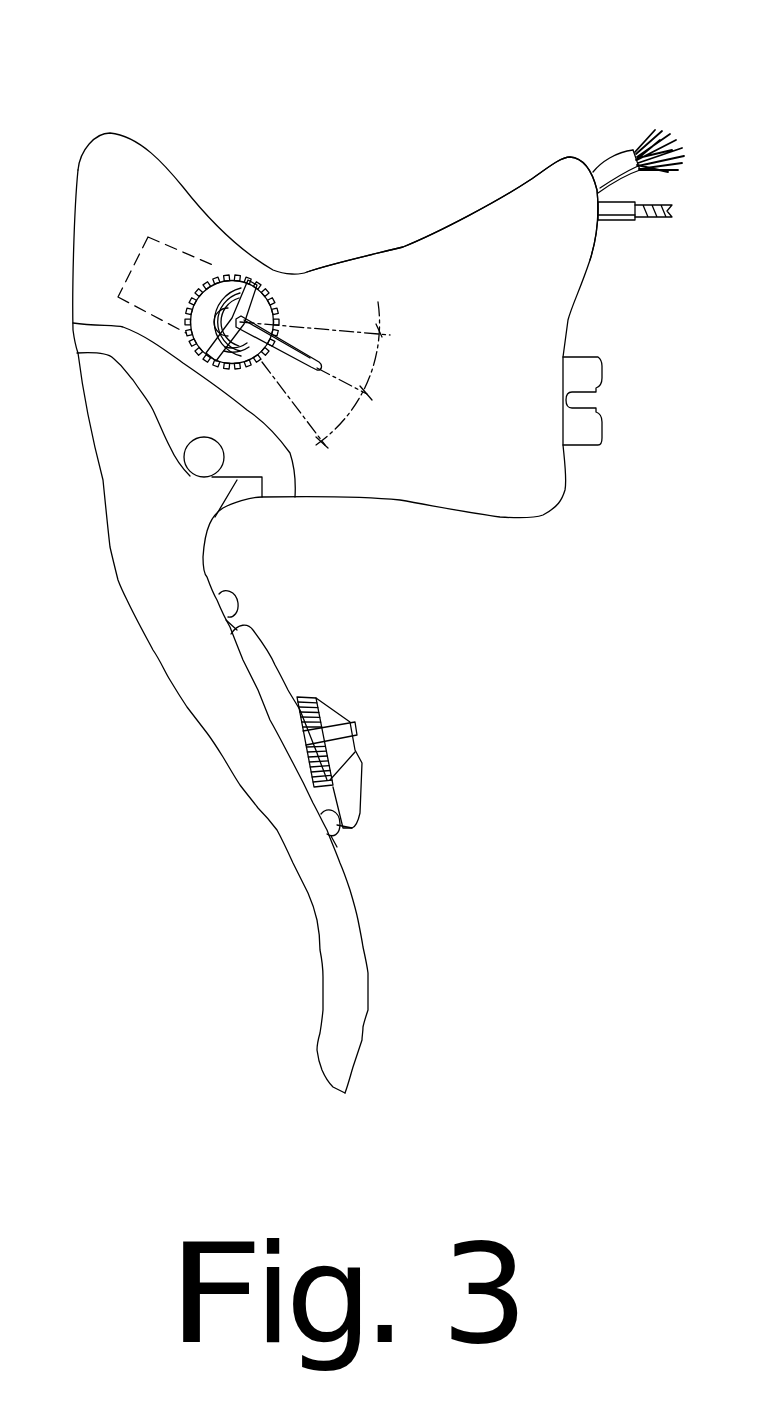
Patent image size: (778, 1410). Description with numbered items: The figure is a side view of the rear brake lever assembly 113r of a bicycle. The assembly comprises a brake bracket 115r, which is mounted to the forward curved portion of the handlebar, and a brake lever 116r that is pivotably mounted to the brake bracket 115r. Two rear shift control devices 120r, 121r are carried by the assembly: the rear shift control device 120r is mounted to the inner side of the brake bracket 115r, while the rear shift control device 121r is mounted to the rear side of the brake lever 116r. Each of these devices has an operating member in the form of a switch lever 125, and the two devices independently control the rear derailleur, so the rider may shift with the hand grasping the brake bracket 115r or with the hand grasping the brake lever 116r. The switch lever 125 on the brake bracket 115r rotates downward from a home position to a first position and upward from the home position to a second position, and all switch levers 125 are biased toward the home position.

The rear brake lever assembly 113r is at (312, 193).
The brake bracket 115r is at (482, 237).
The brake lever 116r is at (237, 760).
The rear shift control device 120r is at (274, 283).
The rear shift control device 121r is at (380, 708).
The switch lever 125 is at (307, 365).